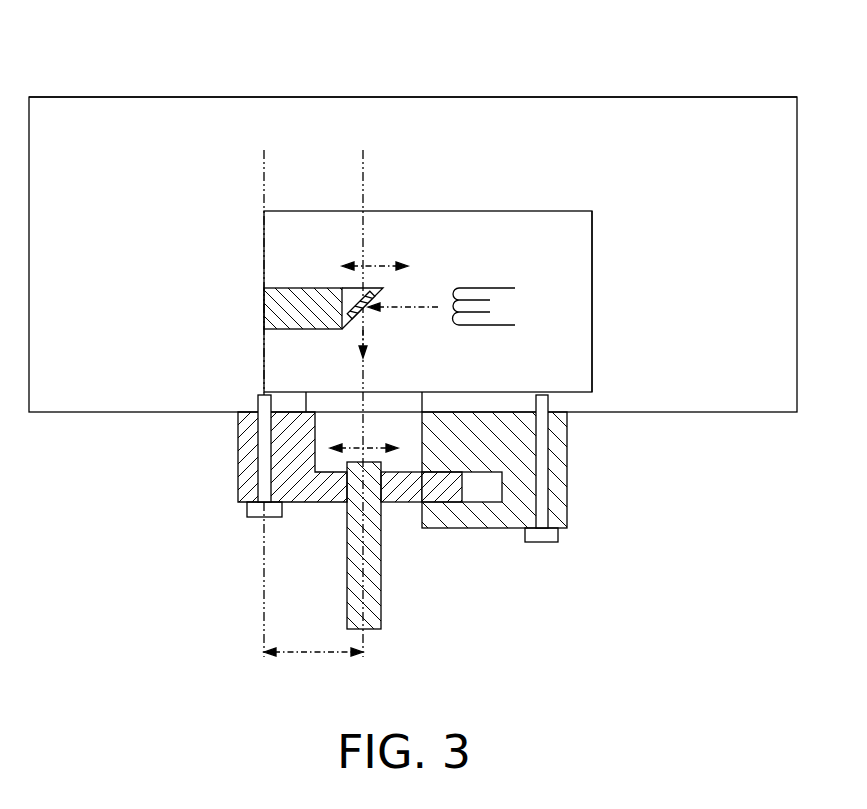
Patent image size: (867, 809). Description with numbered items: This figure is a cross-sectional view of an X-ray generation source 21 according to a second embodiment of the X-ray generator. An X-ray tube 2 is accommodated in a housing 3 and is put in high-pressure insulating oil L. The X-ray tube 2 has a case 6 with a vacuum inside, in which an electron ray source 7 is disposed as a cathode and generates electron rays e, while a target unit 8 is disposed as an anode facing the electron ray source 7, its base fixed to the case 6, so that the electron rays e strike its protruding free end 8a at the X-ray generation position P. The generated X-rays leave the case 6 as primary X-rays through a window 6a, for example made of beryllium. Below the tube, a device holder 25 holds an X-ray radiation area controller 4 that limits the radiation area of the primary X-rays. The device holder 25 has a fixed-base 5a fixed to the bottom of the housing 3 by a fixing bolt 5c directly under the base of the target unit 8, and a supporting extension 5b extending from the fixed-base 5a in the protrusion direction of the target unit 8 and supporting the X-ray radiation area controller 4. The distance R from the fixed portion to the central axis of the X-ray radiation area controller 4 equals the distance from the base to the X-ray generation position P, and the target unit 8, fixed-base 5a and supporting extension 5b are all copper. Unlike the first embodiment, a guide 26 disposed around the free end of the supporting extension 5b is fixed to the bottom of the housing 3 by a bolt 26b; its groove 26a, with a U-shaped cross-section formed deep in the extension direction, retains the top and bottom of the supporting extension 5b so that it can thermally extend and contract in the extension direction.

The housing 3 is at (608, 97).
The X-ray generation source 21 is at (728, 98).
The X-ray tube 2 is at (543, 208).
The case 6 is at (592, 288).
The window 6a is at (405, 391).
The target unit 8 is at (285, 288).
The free end 8a is at (353, 320).
The electron ray source 7 is at (493, 288).
The device holder 25 is at (236, 491).
The fixed-base 5a is at (242, 491).
The supporting extension 5b is at (462, 482).
The fixing bolt 5c is at (252, 520).
The guide 26 is at (535, 506).
The groove 26a is at (496, 492).
The bolt 26b is at (548, 544).
The X-ray radiation area controller 4 is at (381, 617).
The electron rays e is at (400, 301).
The X-ray generation position P is at (366, 316).
The high-pressure insulating oil L is at (718, 388).
The distance R is at (318, 646).